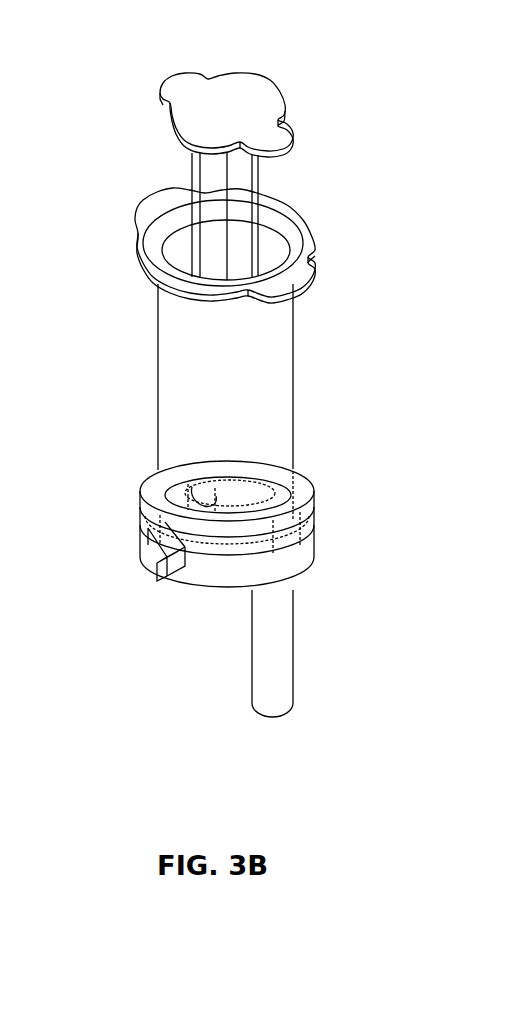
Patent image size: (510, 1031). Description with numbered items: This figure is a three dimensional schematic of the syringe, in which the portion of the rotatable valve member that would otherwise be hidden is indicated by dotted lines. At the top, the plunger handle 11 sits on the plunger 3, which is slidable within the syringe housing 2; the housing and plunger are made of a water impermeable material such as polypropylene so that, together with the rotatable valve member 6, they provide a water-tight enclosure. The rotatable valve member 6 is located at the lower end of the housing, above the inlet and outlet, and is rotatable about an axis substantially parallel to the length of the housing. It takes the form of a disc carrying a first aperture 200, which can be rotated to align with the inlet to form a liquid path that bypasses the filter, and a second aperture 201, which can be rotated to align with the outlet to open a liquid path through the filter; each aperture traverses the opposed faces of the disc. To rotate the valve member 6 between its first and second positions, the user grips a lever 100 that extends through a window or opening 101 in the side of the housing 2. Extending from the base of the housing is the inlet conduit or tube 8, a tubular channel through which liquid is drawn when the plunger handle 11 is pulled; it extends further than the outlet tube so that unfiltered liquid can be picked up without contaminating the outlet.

The plunger handle 11 is at (242, 98).
The plunger 3 is at (252, 172).
The syringe housing 2 is at (158, 368).
The second aperture 201 is at (205, 500).
The first aperture 200 is at (297, 475).
The rotatable valve member 6 is at (310, 562).
The window or opening 101 is at (160, 557).
The lever 100 is at (156, 571).
The inlet conduit or tube 8 is at (250, 647).